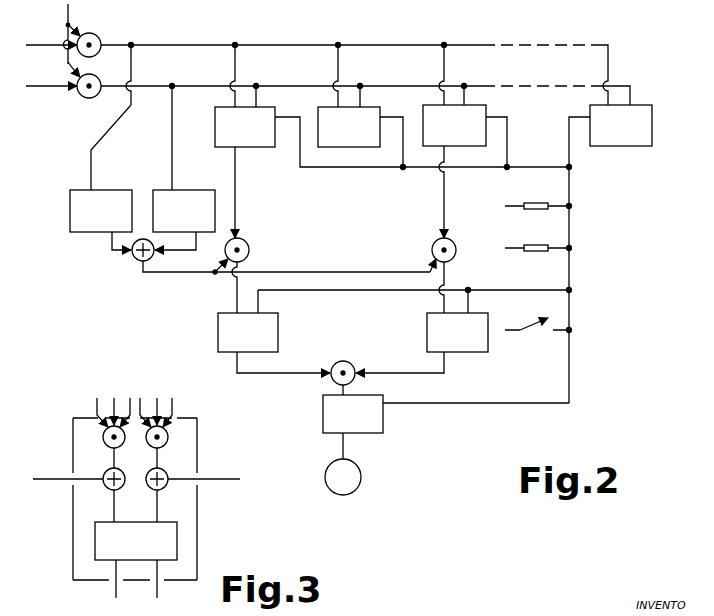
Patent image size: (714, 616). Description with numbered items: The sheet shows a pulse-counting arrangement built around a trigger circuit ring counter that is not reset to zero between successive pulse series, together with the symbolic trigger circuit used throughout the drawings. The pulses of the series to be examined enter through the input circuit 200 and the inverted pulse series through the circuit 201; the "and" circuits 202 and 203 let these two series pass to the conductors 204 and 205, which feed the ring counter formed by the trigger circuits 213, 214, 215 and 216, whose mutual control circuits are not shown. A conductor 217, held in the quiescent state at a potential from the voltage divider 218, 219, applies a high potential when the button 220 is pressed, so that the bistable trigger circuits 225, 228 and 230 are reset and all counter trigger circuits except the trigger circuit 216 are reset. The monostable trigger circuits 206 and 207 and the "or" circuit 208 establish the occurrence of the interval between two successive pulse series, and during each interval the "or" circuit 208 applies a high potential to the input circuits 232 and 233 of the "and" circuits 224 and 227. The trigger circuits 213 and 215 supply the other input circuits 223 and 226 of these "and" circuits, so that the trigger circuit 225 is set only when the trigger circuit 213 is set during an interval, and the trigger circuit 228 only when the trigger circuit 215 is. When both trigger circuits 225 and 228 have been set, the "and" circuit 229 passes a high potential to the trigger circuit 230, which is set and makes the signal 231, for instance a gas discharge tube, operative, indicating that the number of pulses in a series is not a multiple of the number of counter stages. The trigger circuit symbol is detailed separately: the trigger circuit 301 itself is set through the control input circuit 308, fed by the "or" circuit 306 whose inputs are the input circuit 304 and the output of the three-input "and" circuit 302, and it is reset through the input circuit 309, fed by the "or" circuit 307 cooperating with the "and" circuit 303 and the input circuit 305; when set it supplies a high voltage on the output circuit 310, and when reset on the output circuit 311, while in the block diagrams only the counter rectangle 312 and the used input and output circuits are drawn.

In FIG. 2, the input circuit 200 is at (53, 40).
In FIG. 2, the input circuit 201 is at (51, 75).
In FIG. 2, the "and" circuit 202 is at (106, 37).
In FIG. 2, the "and" circuit 203 is at (106, 79).
In FIG. 2, the conductor 204 is at (354, 64).
In FIG. 2, the conductor 205 is at (365, 84).
In FIG. 2, the monostable trigger circuit 206 is at (101, 138).
In FIG. 2, the monostable trigger circuit 207 is at (184, 159).
In FIG. 2, the "or" circuit 208 is at (266, 253).
In FIG. 2, the trigger circuit 213 is at (309, 106).
In FIG. 2, the trigger circuit 214 is at (362, 107).
In FIG. 2, the trigger circuit 215 is at (466, 107).
In FIG. 2, the trigger circuit 216 is at (610, 136).
In FIG. 2, the conductor 217 is at (487, 274).
In FIG. 2, the voltage divider 218 is at (538, 194).
In FIG. 2, the voltage divider 219 is at (538, 236).
In FIG. 2, the button 220 is at (538, 335).
In FIG. 2, the input circuit 223 is at (255, 192).
In FIG. 2, the "and" circuit 224 is at (255, 250).
In FIG. 2, the bistable trigger circuit 225 is at (395, 307).
In FIG. 2, the input circuit 226 is at (461, 192).
In FIG. 2, the "and" circuit 227 is at (462, 250).
In FIG. 2, the bistable trigger circuit 228 is at (457, 307).
In FIG. 2, the "and" circuit 229 is at (340, 363).
In FIG. 2, the bistable trigger circuit 230 is at (446, 409).
In FIG. 2, the signal 231 is at (362, 464).
In FIG. 2, the input circuit 232 is at (206, 262).
In FIG. 2, the input circuit 233 is at (416, 261).
In FIG. 3, the trigger circuit 301 is at (136, 541).
In FIG. 3, the "and" circuit 302 is at (93, 437).
In FIG. 3, the "and" circuit 303 is at (174, 437).
In FIG. 3, the input circuit 304 is at (67, 467).
In FIG. 3, the input circuit 305 is at (205, 467).
In FIG. 3, the "or" circuit 306 is at (123, 464).
In FIG. 3, the "or" circuit 307 is at (150, 488).
In FIG. 3, the control input circuit 308 is at (99, 506).
In FIG. 3, the input circuit 309 is at (175, 506).
In FIG. 3, the output circuit 310 is at (101, 583).
In FIG. 3, the output circuit 311 is at (176, 583).
In FIG. 3, the counter rectangle 312 is at (197, 542).